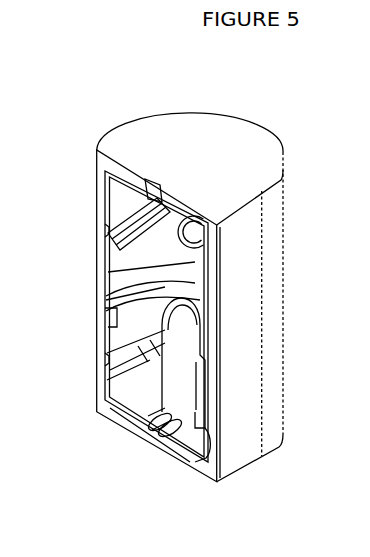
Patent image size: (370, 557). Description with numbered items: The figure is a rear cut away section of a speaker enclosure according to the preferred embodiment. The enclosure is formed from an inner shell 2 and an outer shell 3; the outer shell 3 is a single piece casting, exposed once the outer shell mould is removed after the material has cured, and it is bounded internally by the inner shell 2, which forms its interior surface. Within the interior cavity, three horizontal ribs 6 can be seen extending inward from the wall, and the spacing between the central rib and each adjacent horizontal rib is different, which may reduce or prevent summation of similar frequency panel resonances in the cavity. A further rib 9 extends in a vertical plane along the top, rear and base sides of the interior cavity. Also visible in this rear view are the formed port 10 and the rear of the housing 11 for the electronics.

The inner shell 2 is at (153, 251).
The outer shell 3 is at (194, 174).
The horizontal ribs 6 is at (104, 231).
The rib 9 is at (152, 182).
The formed port 10 is at (201, 227).
The housing for the electronics 11 is at (178, 348).